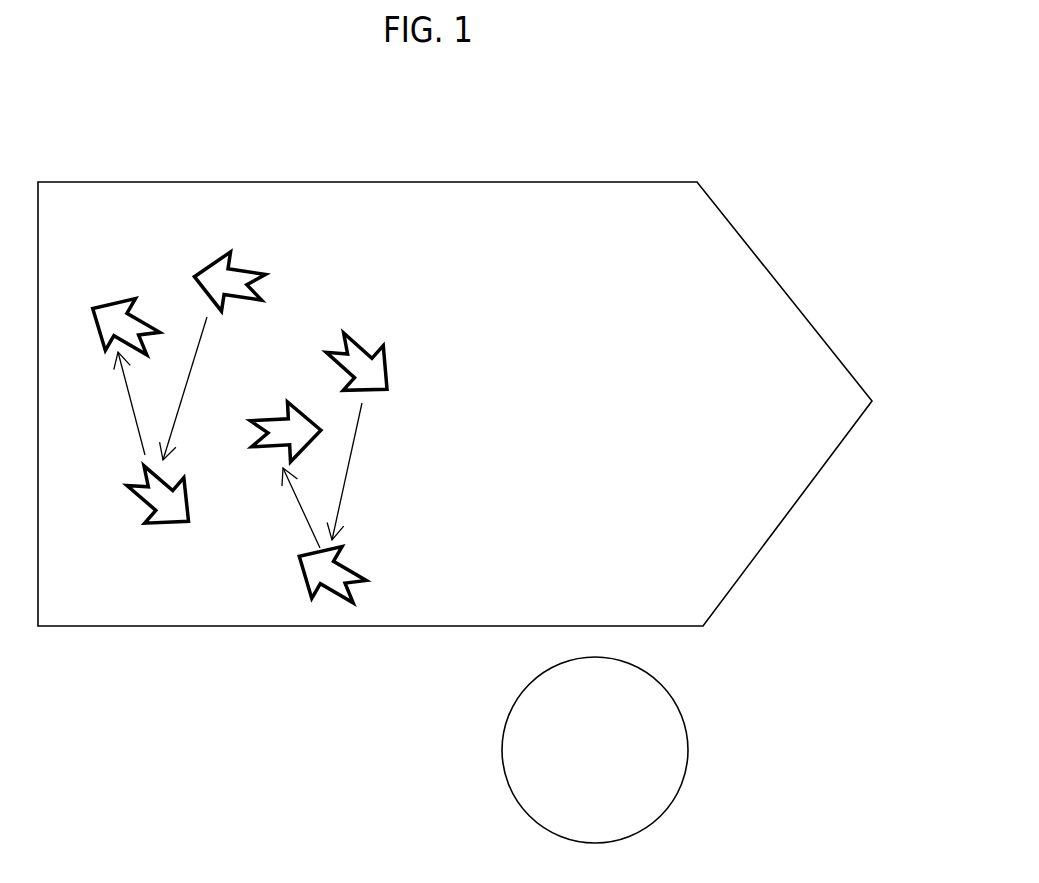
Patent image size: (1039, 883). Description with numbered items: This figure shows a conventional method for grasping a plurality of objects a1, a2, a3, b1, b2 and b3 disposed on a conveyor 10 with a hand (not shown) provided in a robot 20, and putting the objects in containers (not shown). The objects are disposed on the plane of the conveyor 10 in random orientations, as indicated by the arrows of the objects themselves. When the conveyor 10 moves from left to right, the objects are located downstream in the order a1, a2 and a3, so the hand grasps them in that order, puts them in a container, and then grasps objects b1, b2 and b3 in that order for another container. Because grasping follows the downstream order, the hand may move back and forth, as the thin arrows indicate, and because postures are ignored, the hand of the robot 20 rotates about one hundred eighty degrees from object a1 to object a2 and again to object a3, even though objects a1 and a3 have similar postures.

The conveyor 10 is at (613, 182).
The robot 20 is at (672, 695).
The object a1 is at (367, 343).
The object a2 is at (348, 565).
The object a3 is at (270, 450).
The object b1 is at (242, 268).
The object b2 is at (138, 507).
The object b3 is at (105, 338).